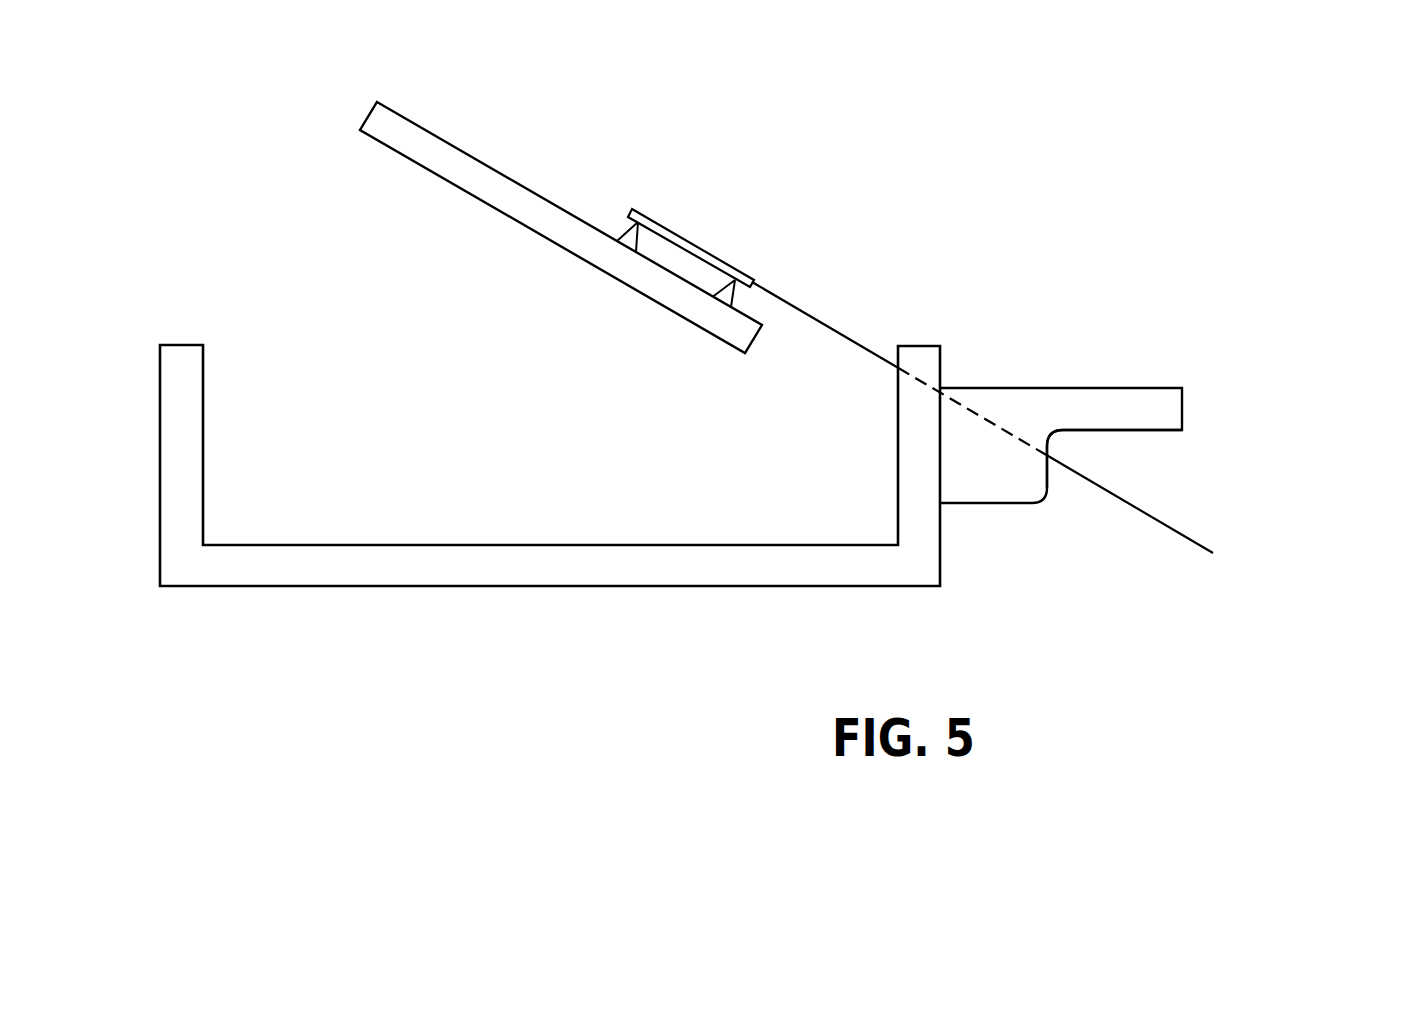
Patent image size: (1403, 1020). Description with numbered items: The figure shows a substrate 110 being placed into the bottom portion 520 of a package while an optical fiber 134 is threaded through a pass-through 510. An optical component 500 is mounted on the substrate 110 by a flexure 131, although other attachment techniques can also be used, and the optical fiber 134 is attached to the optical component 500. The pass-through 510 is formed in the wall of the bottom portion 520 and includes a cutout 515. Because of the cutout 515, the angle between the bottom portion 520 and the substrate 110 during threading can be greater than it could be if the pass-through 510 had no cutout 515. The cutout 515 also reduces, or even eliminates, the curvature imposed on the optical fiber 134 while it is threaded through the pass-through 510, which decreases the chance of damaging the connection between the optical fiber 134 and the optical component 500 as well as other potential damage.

The substrate 110 is at (470, 150).
The flexure 131 is at (622, 235).
The optical component 500 is at (777, 237).
The pass-through 510 is at (1180, 357).
The cutout 515 is at (1188, 432).
The optical fiber 134 is at (1195, 543).
The bottom portion 520 is at (593, 587).